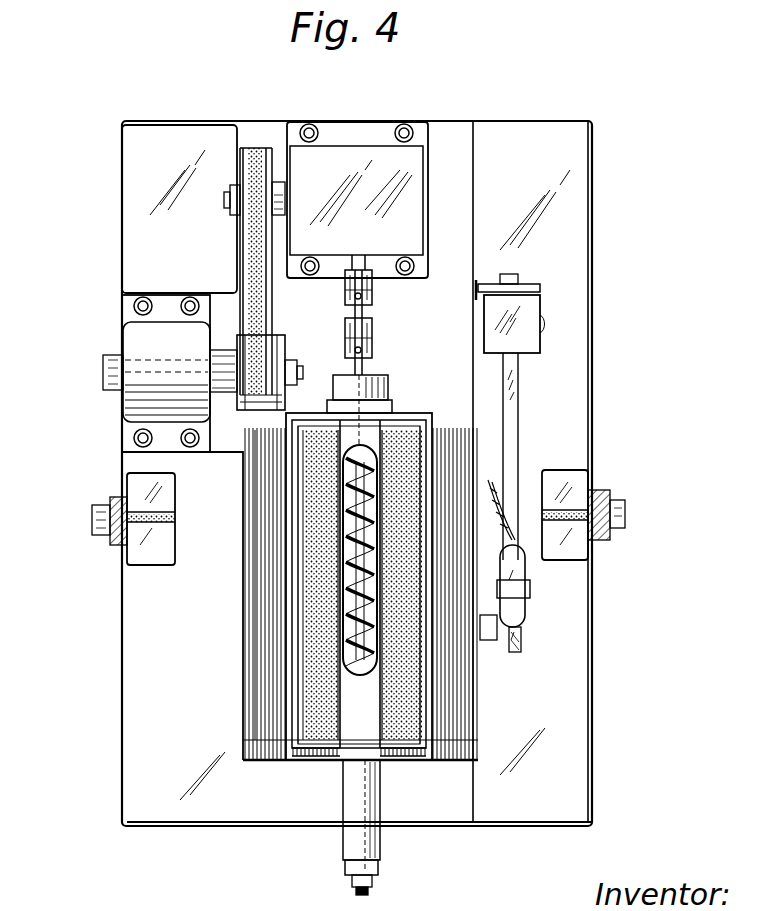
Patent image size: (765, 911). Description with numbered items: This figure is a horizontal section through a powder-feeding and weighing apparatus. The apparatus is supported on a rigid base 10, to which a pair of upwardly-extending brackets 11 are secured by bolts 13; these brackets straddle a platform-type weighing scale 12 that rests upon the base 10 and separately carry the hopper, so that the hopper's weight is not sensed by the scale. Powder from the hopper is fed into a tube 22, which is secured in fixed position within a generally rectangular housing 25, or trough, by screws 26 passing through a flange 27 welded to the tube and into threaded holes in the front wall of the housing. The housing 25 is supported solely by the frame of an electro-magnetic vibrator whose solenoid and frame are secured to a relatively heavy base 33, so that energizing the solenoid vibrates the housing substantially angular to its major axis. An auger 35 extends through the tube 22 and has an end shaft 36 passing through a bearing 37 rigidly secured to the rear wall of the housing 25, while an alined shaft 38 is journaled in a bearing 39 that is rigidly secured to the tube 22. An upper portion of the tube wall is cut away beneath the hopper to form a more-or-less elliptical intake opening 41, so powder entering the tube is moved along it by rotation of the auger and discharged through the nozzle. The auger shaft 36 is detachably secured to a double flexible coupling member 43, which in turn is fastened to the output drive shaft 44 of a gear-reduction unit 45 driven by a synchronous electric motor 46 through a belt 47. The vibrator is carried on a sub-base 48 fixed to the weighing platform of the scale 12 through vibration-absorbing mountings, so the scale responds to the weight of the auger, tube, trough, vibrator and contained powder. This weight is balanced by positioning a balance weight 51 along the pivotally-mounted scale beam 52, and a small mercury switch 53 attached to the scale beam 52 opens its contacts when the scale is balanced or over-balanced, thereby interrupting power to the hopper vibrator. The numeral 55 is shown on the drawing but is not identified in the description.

The rigid base 10 is at (125, 742).
The upwardly-extending brackets 11 is at (120, 495).
The platform-type weighing scale 12 is at (306, 772).
The bolts 13 is at (92, 520).
The tube 22 is at (338, 600).
The housing 25 is at (300, 712).
The screws 26 is at (390, 758).
The flange 27 is at (330, 757).
The base 33 is at (262, 672).
The auger 35 is at (358, 630).
The end shaft 36 is at (365, 372).
The bearing 37 is at (388, 388).
The alined shaft 38 is at (352, 892).
The bearing 39 is at (345, 866).
The intake opening 41 is at (355, 540).
The double flexible coupling member 43 is at (345, 300).
The output drive shaft 44 is at (362, 270).
The gear-reduction unit 45 is at (372, 150).
The synchronous electric motor 46 is at (130, 332).
The belt 47 is at (262, 268).
The sub-base 48 is at (243, 470).
The balance weight 51 is at (530, 345).
The scale beam 52 is at (518, 420).
The mercury switch 53 is at (520, 570).
The bracket bar 55 is at (528, 288).